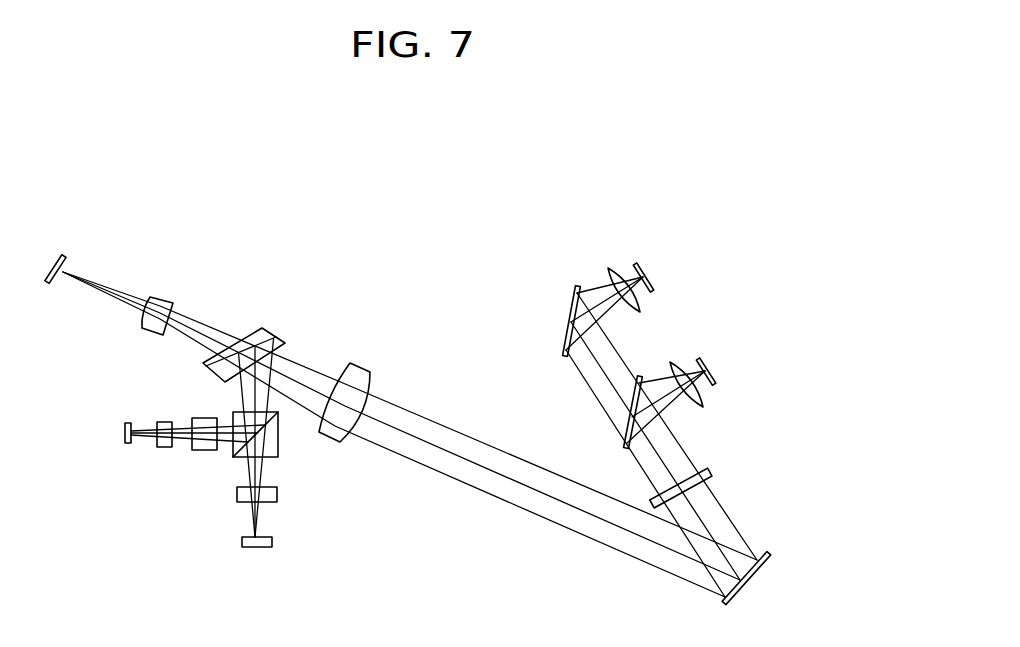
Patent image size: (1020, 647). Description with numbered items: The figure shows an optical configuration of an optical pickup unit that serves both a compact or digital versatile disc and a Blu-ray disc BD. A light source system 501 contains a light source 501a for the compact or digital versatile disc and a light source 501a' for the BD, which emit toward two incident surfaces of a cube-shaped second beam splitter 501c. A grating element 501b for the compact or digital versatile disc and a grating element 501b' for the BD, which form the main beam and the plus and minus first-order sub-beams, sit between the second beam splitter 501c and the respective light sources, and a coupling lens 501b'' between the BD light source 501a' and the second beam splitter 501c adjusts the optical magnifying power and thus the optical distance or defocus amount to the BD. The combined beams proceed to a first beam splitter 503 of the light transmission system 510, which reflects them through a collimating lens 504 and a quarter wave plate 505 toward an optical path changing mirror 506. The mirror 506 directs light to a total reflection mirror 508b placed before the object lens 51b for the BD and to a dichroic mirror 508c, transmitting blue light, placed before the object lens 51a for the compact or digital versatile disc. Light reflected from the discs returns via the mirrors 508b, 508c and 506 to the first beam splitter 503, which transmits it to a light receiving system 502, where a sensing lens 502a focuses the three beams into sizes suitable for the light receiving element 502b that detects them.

The light transmission system 510 is at (470, 172).
The light receiving system 502 is at (123, 259).
The light receiving element 502b is at (62, 252).
The sensing lens 502a is at (163, 303).
The first beam splitter 503 is at (267, 337).
The collimating lens 504 is at (362, 370).
The light source system 501 is at (205, 495).
The second beam splitter 501c is at (238, 413).
The light source for a BD 501a' is at (98, 469).
The grating element for a BD 501b' is at (143, 483).
The coupling lens 501b'' is at (202, 467).
The grating element for a CD/DVD 501b is at (291, 492).
The light source for a CD/DVD 501a is at (293, 542).
The total reflection mirror 508b is at (570, 322).
The object lens corresponding to a BD 51b is at (610, 270).
The Blu-ray disc BD is at (647, 278).
The object lens corresponding to a CD/DVD 51a is at (703, 403).
The dichroic mirror 508c is at (623, 443).
The quarter wave plate 505 is at (710, 468).
The optical path changing mirror 506 is at (765, 552).